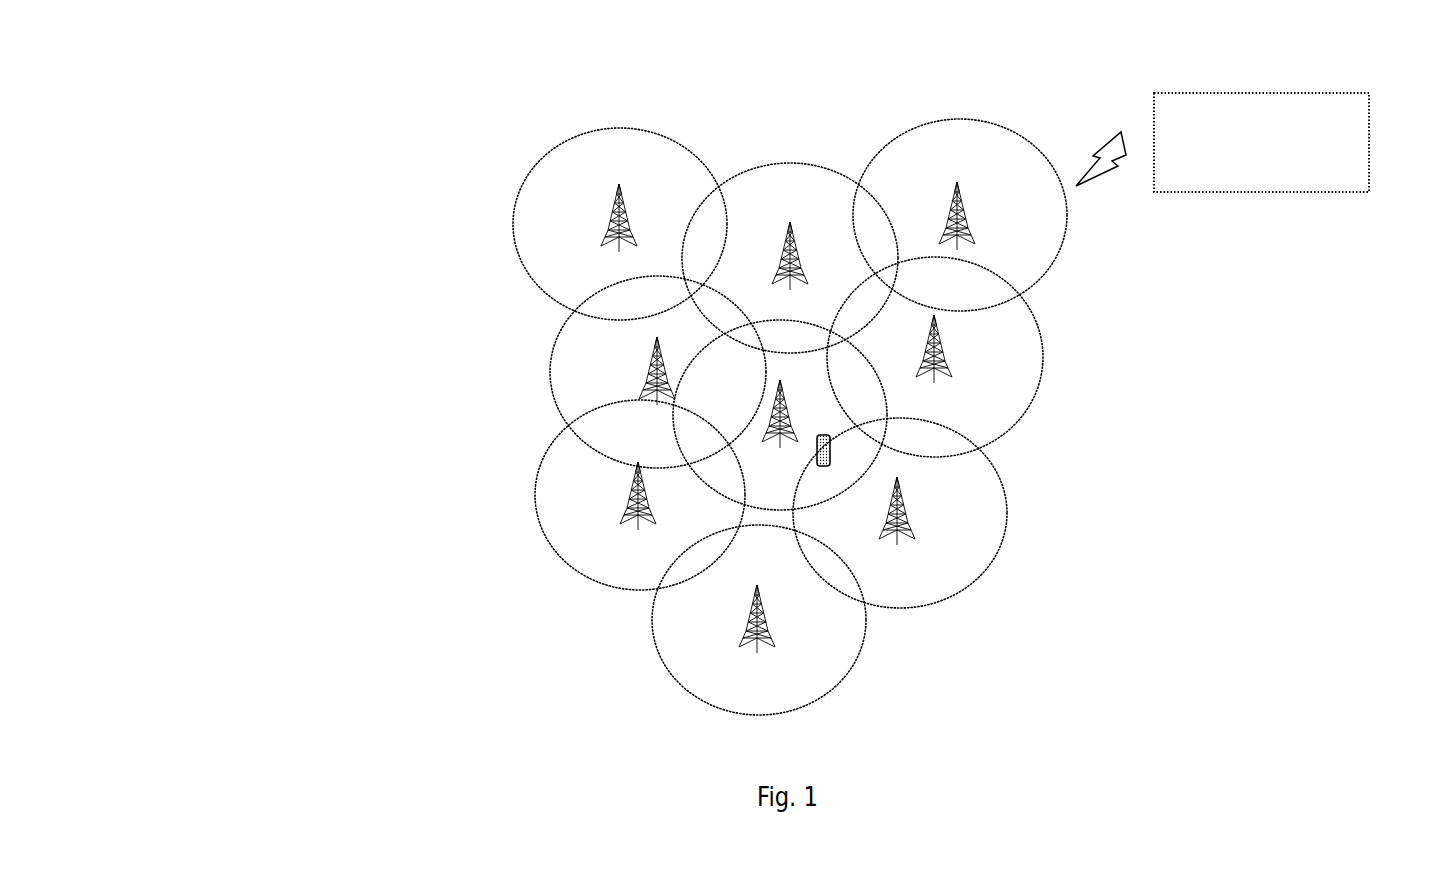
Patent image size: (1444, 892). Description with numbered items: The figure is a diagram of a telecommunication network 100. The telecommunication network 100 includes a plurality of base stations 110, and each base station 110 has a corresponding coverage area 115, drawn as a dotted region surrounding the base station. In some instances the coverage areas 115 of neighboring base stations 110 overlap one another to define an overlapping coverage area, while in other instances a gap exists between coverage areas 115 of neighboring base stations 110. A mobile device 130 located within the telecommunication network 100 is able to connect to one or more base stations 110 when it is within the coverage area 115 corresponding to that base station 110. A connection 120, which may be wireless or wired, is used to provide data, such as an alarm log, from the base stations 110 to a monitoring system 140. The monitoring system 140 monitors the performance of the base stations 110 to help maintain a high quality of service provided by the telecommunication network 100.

The telecommunication network 100 is at (150, 93).
The base station 110 is at (610, 218).
The coverage area 115 is at (520, 251).
The connection 120 is at (1108, 143).
The mobile device 130 is at (831, 452).
The monitoring system 140 is at (1305, 193).